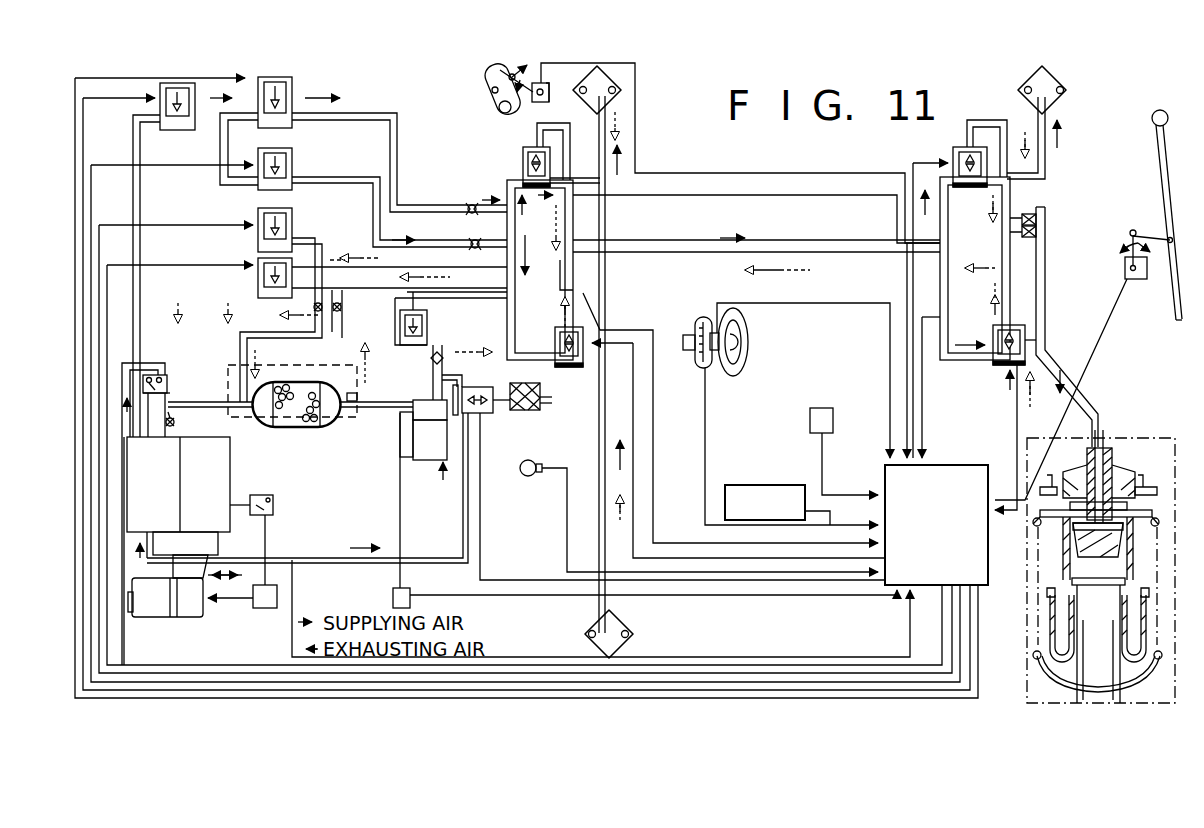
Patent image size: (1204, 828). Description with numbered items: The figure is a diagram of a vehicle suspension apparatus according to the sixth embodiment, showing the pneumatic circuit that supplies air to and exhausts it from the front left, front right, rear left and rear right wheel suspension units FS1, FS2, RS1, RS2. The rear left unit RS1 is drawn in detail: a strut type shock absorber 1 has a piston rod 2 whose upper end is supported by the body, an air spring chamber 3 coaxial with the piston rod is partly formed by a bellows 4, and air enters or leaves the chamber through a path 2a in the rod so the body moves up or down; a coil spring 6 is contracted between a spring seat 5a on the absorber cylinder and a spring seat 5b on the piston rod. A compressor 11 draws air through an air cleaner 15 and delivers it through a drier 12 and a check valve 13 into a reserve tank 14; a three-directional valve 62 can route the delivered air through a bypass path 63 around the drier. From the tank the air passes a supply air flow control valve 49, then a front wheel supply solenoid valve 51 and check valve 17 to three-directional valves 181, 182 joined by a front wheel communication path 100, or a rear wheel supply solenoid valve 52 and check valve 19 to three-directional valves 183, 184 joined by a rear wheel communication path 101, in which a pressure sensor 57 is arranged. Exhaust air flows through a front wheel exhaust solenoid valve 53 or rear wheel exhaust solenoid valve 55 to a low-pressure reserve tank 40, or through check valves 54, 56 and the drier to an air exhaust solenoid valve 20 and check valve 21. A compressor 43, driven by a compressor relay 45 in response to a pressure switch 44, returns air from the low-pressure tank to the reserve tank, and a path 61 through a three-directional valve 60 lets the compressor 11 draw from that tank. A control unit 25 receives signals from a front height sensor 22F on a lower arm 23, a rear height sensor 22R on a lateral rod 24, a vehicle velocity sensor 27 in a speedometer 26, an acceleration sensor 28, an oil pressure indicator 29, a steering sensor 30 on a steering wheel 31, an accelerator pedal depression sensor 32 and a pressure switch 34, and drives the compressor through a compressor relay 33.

The strut type shock absorber 1 is at (1080, 688).
The piston rod 2 is at (1118, 562).
The path 2a is at (1100, 448).
The air spring chamber 3 is at (1126, 580).
The bellows 4 is at (1148, 626).
The spring seat 5a is at (1130, 680).
The spring seat 5b is at (1142, 490).
The coil spring 6 is at (1156, 519).
The compressor 11 is at (423, 442).
The drier 12 is at (296, 432).
The check valve 13 is at (176, 424).
The reserve tank 14 is at (185, 543).
The air cleaner 15 is at (518, 410).
The check valve 17 is at (470, 205).
The check valve 19 is at (473, 243).
The air exhaust solenoid valve 20 is at (432, 324).
The check valve 21 is at (444, 356).
The front height sensor 22F is at (534, 102).
The rear height sensor 22R is at (1125, 267).
The lower arm 23 is at (482, 82).
The lateral rod 24 is at (1156, 209).
The control unit 25 is at (946, 464).
The speedometer 26 is at (769, 418).
The vehicle velocity sensor 27 is at (698, 369).
The acceleration (G) sensor 28 is at (833, 421).
The indicator (OIL) 29 is at (742, 484).
The steering sensor 30 is at (714, 370).
The steering wheel 31 is at (800, 380).
The accelerator pedal depression sensor 32 is at (524, 474).
The compressor relay 33 is at (408, 595).
The pressure switch 34 is at (162, 374).
The low-pressure reserve tank 40 is at (232, 479).
The compressor 43 is at (195, 617).
The pressure switch 44 is at (275, 506).
The compressor relay 45 is at (262, 608).
The supply air flow control valve 49 is at (180, 86).
The front wheel supply solenoid valve 51 is at (294, 94).
The rear wheel supply solenoid valve 52 is at (296, 165).
The front wheel exhaust solenoid valve 53 is at (296, 229).
The check valve 54 is at (316, 307).
The rear wheel exhaust solenoid valve 55 is at (305, 273).
The check valve 56 is at (341, 305).
The pressure sensor 57 is at (1036, 212).
The three-directional valve 60 is at (488, 413).
The path 61 is at (321, 558).
The three-directional valve 62 is at (360, 425).
The bypass path 63 is at (285, 365).
The front wheel communication path 100 is at (512, 232).
The rear wheel communication path 101 is at (951, 232).
The three-directional valve 181 is at (560, 372).
The three-directional valve 182 is at (521, 159).
The three-directional valve 183 is at (1028, 341).
The three-directional valve 184 is at (950, 149).
The front left wheel suspension unit FS1 is at (631, 624).
The front right wheel suspension unit FS2 is at (624, 100).
The rear left wheel suspension unit RS1 is at (1109, 553).
The rear right wheel suspension unit RS2 is at (1066, 88).